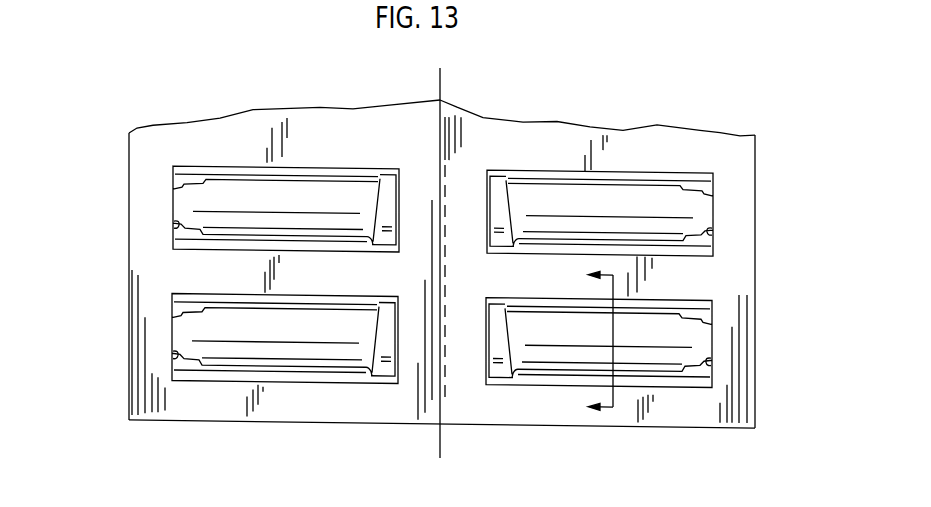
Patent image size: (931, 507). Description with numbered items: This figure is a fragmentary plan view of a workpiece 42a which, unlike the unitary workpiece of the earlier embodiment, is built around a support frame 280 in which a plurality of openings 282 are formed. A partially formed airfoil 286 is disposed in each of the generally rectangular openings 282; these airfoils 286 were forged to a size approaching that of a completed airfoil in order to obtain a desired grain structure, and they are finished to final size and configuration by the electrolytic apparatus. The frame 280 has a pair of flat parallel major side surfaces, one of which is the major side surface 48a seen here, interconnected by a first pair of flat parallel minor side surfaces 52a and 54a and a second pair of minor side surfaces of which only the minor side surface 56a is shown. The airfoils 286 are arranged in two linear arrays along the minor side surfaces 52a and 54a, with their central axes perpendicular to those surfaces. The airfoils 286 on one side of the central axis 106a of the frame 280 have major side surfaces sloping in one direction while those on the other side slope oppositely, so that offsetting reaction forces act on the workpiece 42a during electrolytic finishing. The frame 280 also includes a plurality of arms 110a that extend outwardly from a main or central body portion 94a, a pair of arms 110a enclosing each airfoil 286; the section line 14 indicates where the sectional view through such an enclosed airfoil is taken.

The workpiece 42a is at (840, 61).
The frame 280 is at (766, 145).
The openings 282 is at (172, 231).
The partially formed airfoils 286 is at (181, 207).
The arms 110a is at (268, 100).
The major side surface 48a is at (410, 112).
The minor side surface 52a is at (129, 162).
The minor side surface 54a is at (755, 403).
The minor side surface 56a is at (478, 425).
The central body portion 94a is at (412, 367).
The central axis 106a is at (443, 80).
The section line 14 is at (579, 342).